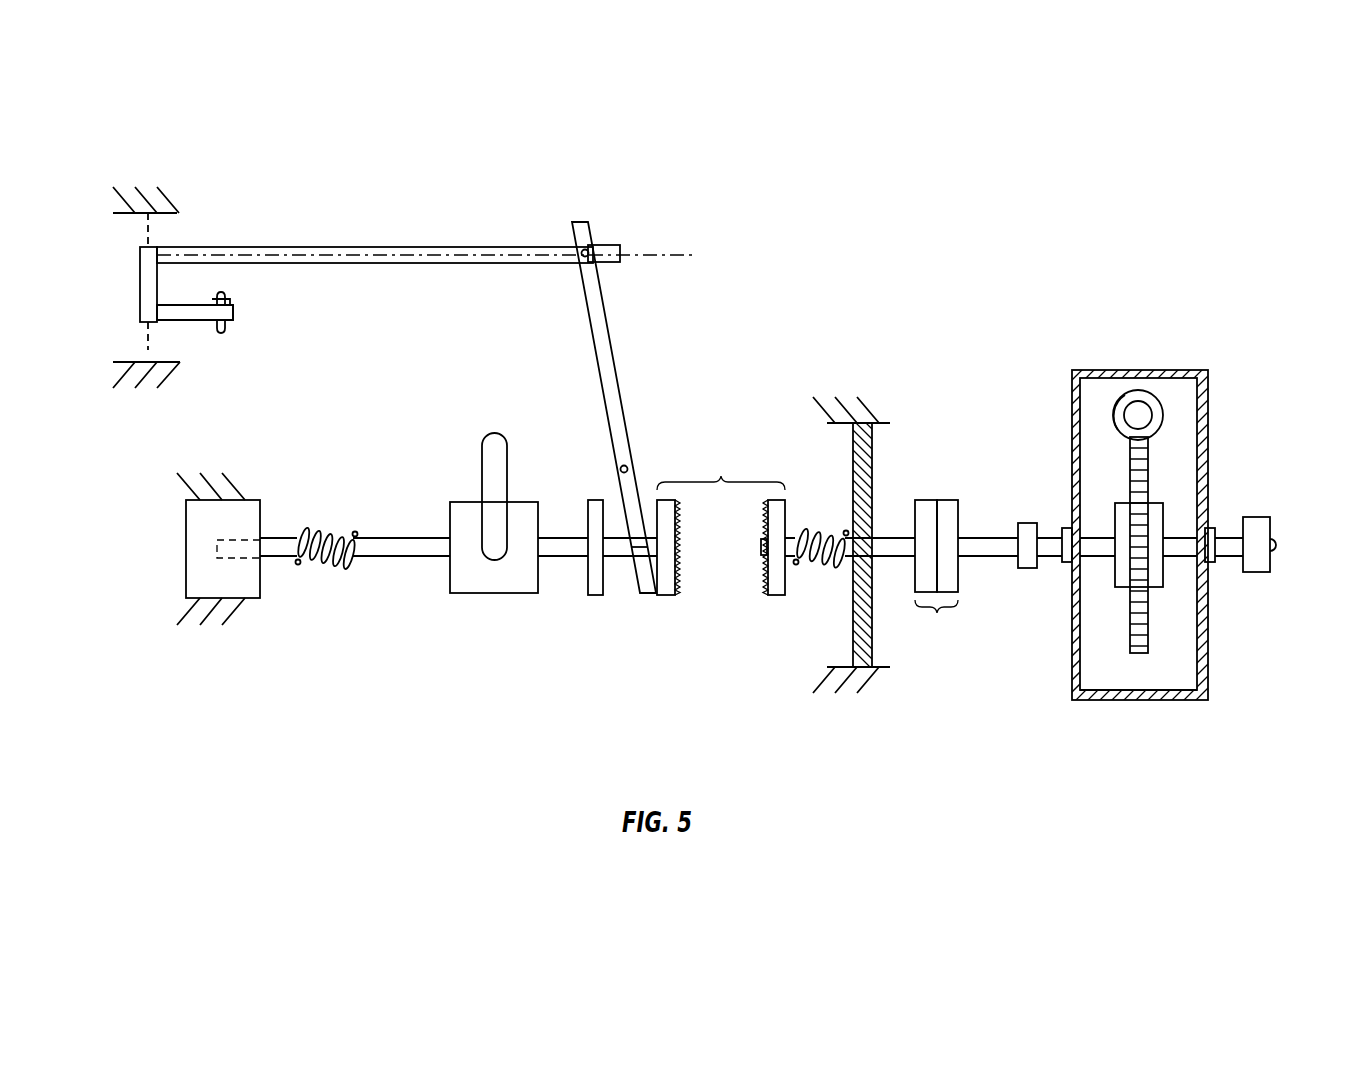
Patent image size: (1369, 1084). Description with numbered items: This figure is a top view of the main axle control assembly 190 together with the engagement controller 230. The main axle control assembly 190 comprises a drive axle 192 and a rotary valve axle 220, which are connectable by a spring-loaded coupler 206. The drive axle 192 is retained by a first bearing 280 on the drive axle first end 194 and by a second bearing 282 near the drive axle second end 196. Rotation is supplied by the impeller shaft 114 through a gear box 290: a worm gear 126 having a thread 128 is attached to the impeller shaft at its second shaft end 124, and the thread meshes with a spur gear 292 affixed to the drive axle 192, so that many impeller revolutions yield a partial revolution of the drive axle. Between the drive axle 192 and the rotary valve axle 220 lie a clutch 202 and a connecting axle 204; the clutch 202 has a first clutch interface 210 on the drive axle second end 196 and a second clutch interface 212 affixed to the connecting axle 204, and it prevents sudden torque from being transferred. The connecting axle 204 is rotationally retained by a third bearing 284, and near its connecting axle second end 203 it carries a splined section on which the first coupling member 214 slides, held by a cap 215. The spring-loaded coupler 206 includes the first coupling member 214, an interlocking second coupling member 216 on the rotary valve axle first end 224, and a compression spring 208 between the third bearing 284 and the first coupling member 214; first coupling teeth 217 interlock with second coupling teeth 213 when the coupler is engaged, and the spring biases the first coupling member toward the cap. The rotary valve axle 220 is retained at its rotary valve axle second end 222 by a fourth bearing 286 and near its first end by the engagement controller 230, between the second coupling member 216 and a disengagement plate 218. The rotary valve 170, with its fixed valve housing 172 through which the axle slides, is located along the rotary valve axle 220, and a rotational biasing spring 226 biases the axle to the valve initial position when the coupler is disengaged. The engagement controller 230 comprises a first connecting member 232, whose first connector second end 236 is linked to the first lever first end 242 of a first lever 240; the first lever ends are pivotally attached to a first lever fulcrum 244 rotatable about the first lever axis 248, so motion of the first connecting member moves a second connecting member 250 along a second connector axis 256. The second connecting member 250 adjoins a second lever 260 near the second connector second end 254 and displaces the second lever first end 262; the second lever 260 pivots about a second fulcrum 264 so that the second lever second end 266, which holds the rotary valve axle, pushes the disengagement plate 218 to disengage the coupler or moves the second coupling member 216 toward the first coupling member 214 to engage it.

The impeller shaft 114 is at (1125, 405).
The second shaft end 124 is at (1150, 415).
The worm gear 126 is at (1160, 432).
The thread 128 is at (1112, 420).
The rotary valve 170 is at (450, 580).
The valve housing 172 is at (495, 595).
The main axle control assembly 190 is at (1224, 519).
The drive axle 192 is at (982, 558).
The drive axle first end 194 is at (1230, 560).
The drive axle second end 196 is at (962, 545).
The clutch 202 is at (938, 621).
The connecting axle second end 203 is at (796, 526).
The connecting axle 204 is at (907, 540).
The spring-loaded coupler 206 is at (721, 468).
The compression spring 208 is at (822, 565).
The first clutch interface 210 is at (948, 500).
The second clutch interface 212 is at (925, 500).
The second coupling teeth 213 is at (770, 582).
The first coupling member 214 is at (772, 597).
The cap 215 is at (762, 548).
The second coupling member 216 is at (666, 597).
The first coupling teeth 217 is at (679, 532).
The disengagement plate 218 is at (594, 500).
The rotary valve axle 220 is at (383, 538).
The rotary valve axle second end 222 is at (232, 540).
The rotary valve axle first end 224 is at (646, 542).
The rotational biasing spring 226 is at (328, 538).
The engagement controller 230 is at (232, 225).
The first connecting member 232 is at (232, 300).
The first connector second end 236 is at (216, 299).
The first lever 240 is at (180, 322).
The first lever first end 242 is at (233, 316).
The first lever fulcrum 244 is at (139, 277).
The first lever axis 248 is at (148, 343).
The second connecting member 250 is at (366, 247).
The second connector second end 254 is at (603, 248).
The second connector axis 256 is at (672, 253).
The second lever 260 is at (604, 381).
The second lever first end 262 is at (576, 222).
The second fulcrum 264 is at (629, 470).
The second lever second end 266 is at (646, 588).
The first bearing 280 is at (1260, 572).
The second bearing 282 is at (1030, 570).
The third bearing 284 is at (868, 640).
The fourth bearing 286 is at (185, 536).
The gear box 290 is at (1135, 371).
The spur gear 292 is at (1140, 655).